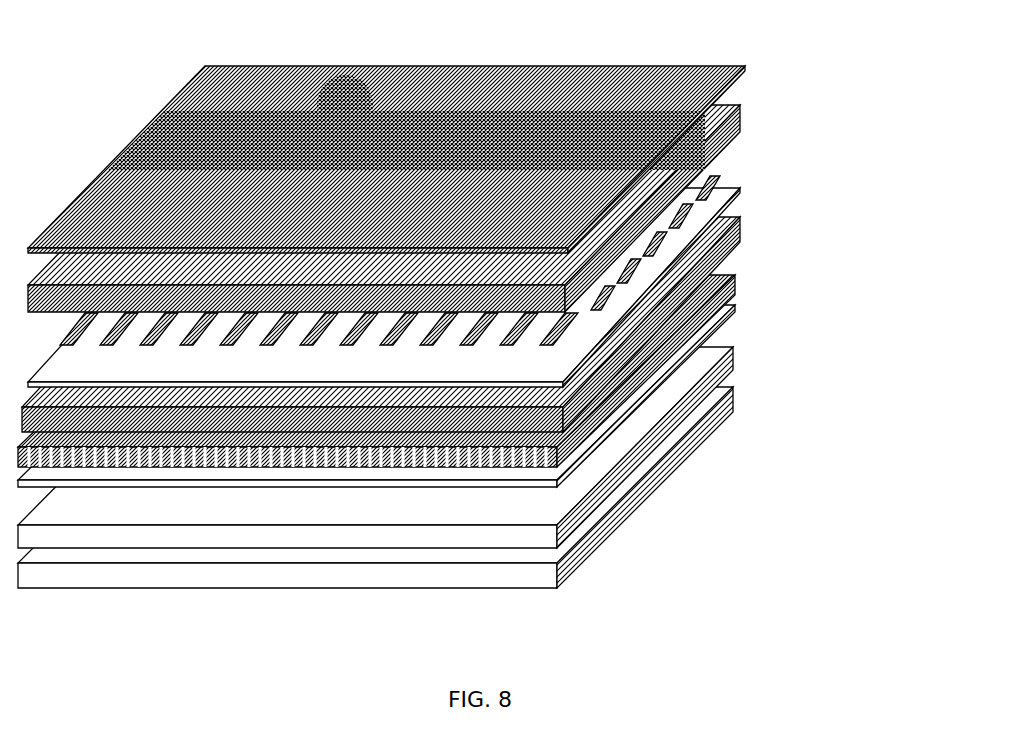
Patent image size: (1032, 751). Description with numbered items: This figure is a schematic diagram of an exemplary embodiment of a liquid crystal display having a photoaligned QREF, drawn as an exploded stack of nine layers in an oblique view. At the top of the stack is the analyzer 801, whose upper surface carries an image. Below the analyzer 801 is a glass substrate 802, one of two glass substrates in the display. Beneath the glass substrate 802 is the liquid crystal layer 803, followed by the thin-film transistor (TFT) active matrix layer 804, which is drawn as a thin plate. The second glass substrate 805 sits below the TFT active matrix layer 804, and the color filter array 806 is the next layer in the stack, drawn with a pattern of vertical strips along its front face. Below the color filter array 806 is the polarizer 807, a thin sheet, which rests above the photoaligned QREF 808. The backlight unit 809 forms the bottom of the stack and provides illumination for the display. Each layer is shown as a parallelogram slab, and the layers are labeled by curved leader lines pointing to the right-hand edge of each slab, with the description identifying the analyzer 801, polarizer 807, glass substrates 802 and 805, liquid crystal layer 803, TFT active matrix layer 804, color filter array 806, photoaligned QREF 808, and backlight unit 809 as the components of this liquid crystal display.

The analyzer 801 is at (752, 73).
The glass substrate 802 is at (748, 115).
The liquid crystal layer 803 is at (747, 173).
The thin-film transistor (TFT) active matrix layer 804 is at (745, 200).
The glass substrate 805 is at (752, 230).
The color filter array 806 is at (747, 278).
The polarizer 807 is at (747, 305).
The photoaligned QREF 808 is at (747, 360).
The backlight unit 809 is at (748, 408).